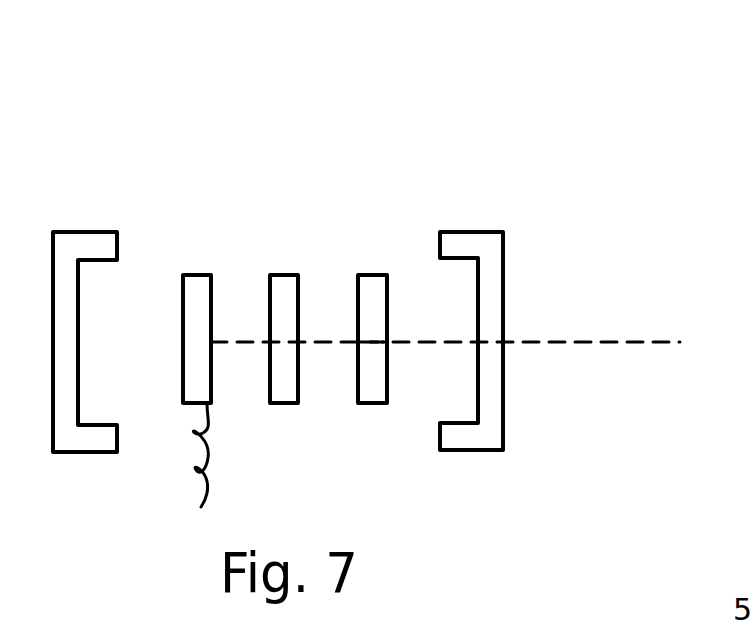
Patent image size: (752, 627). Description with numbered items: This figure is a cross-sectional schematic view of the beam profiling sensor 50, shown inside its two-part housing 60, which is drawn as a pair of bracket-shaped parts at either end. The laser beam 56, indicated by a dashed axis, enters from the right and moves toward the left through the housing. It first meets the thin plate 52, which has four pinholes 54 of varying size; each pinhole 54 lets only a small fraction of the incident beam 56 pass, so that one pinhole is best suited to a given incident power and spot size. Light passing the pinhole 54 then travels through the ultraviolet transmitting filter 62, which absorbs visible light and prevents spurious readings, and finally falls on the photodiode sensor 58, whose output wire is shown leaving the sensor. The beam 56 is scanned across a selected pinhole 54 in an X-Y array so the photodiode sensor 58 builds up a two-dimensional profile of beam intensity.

The beam profiling sensor 50 is at (409, 128).
The thin plate 52 is at (375, 406).
The pinhole 54 is at (386, 340).
The laser beam 56 is at (572, 341).
The photodiode sensor 58 is at (195, 274).
The two-part housing 60 is at (70, 232).
The ultraviolet transmitting filter 62 is at (283, 275).